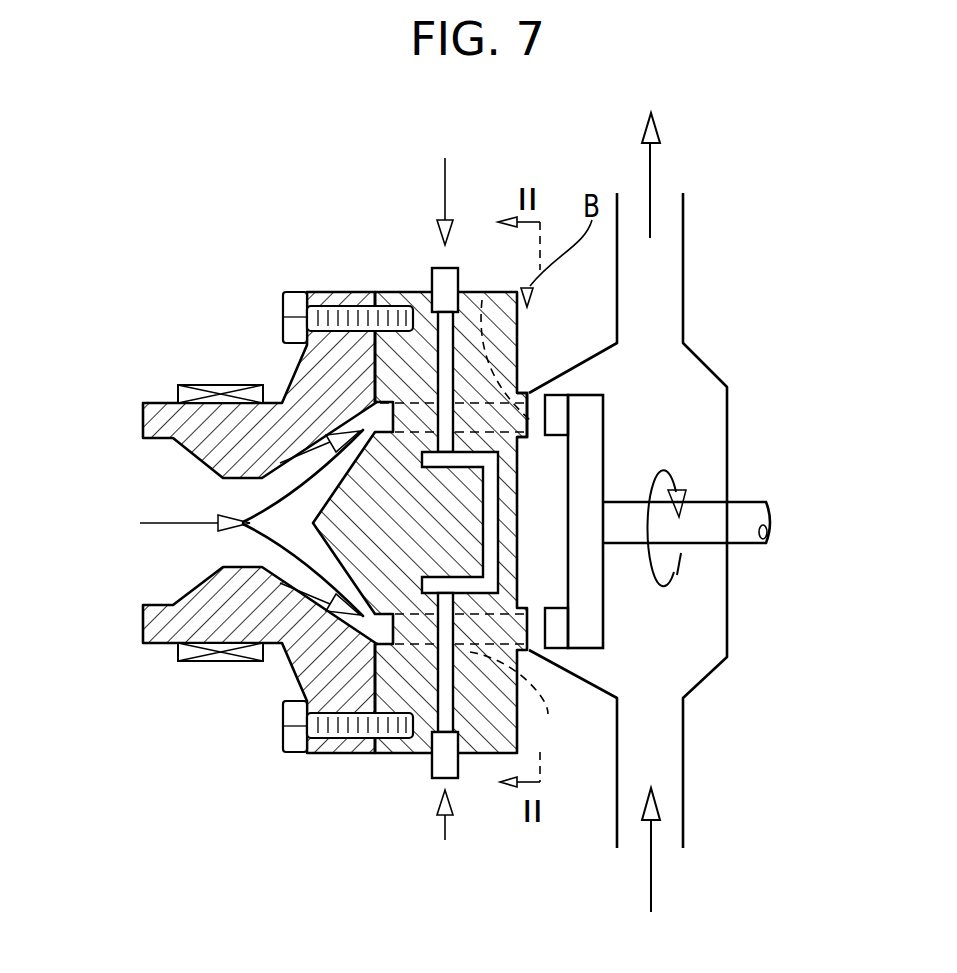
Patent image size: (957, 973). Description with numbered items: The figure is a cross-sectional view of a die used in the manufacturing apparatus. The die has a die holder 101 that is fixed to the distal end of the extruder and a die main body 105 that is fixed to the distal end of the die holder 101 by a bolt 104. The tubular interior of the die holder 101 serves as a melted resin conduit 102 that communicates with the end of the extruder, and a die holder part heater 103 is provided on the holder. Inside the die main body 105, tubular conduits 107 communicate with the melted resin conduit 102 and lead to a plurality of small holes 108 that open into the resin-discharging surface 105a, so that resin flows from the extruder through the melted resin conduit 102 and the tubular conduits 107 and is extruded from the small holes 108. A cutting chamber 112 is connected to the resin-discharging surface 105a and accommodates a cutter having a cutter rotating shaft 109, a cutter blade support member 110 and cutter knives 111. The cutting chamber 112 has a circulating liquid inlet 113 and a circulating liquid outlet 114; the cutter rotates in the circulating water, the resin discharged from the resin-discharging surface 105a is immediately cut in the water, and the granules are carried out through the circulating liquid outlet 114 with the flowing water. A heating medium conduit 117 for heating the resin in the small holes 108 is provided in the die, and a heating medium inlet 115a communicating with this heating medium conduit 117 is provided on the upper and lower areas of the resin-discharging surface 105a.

The die holder 101 is at (155, 425).
The melted resin conduit 102 is at (155, 522).
The die holder part heater 103 is at (203, 662).
The bolt 104 is at (283, 320).
The die main body 105 is at (412, 297).
The resin-discharging surface 105a is at (548, 420).
The tubular conduit 107 is at (486, 298).
The small hole 108 is at (533, 403).
The cutter rotating shaft 109 is at (738, 510).
The cutter blade support member 110 is at (588, 600).
The cutter knife 111 is at (558, 402).
The cutting chamber 112 is at (700, 353).
The circulating liquid inlet 113 is at (652, 868).
The circulating liquid outlet 114 is at (652, 173).
The heating medium inlet 115a is at (457, 519).
The heating medium conduit 117 is at (295, 643).